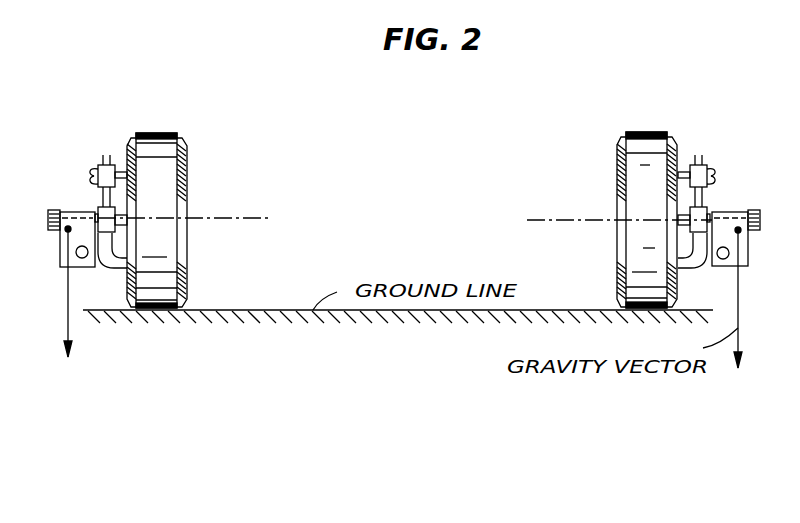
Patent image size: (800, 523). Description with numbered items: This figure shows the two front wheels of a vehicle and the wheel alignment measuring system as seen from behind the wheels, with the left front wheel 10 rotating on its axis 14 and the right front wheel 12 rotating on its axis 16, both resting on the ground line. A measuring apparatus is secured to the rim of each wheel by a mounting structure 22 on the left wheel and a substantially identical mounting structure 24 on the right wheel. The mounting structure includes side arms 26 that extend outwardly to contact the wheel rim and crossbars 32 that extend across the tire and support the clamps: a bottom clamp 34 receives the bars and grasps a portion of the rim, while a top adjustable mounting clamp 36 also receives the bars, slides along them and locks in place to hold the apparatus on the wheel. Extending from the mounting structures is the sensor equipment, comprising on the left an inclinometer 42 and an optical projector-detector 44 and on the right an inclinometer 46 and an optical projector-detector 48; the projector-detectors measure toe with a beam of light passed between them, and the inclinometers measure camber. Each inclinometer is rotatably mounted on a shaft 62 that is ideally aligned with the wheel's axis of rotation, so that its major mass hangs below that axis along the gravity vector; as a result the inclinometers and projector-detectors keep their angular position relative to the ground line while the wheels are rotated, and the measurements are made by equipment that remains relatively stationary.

The left front wheel 10 is at (165, 178).
The right front wheel 12 is at (633, 159).
The axis 14 is at (160, 218).
The axis 16 is at (641, 220).
The mounting structure 22 is at (138, 189).
The mounting structure 24 is at (724, 168).
The side arm 26 is at (678, 222).
The crossbar 32 is at (703, 198).
The bottom clamp 34 is at (688, 270).
The top adjustable mounting clamp 36 is at (690, 172).
The inclinometer 42 is at (62, 251).
The optical projector-detector 44 is at (80, 264).
The inclinometer 46 is at (748, 243).
The optical projector-detector 48 is at (725, 259).
The shaft 62 is at (722, 217).